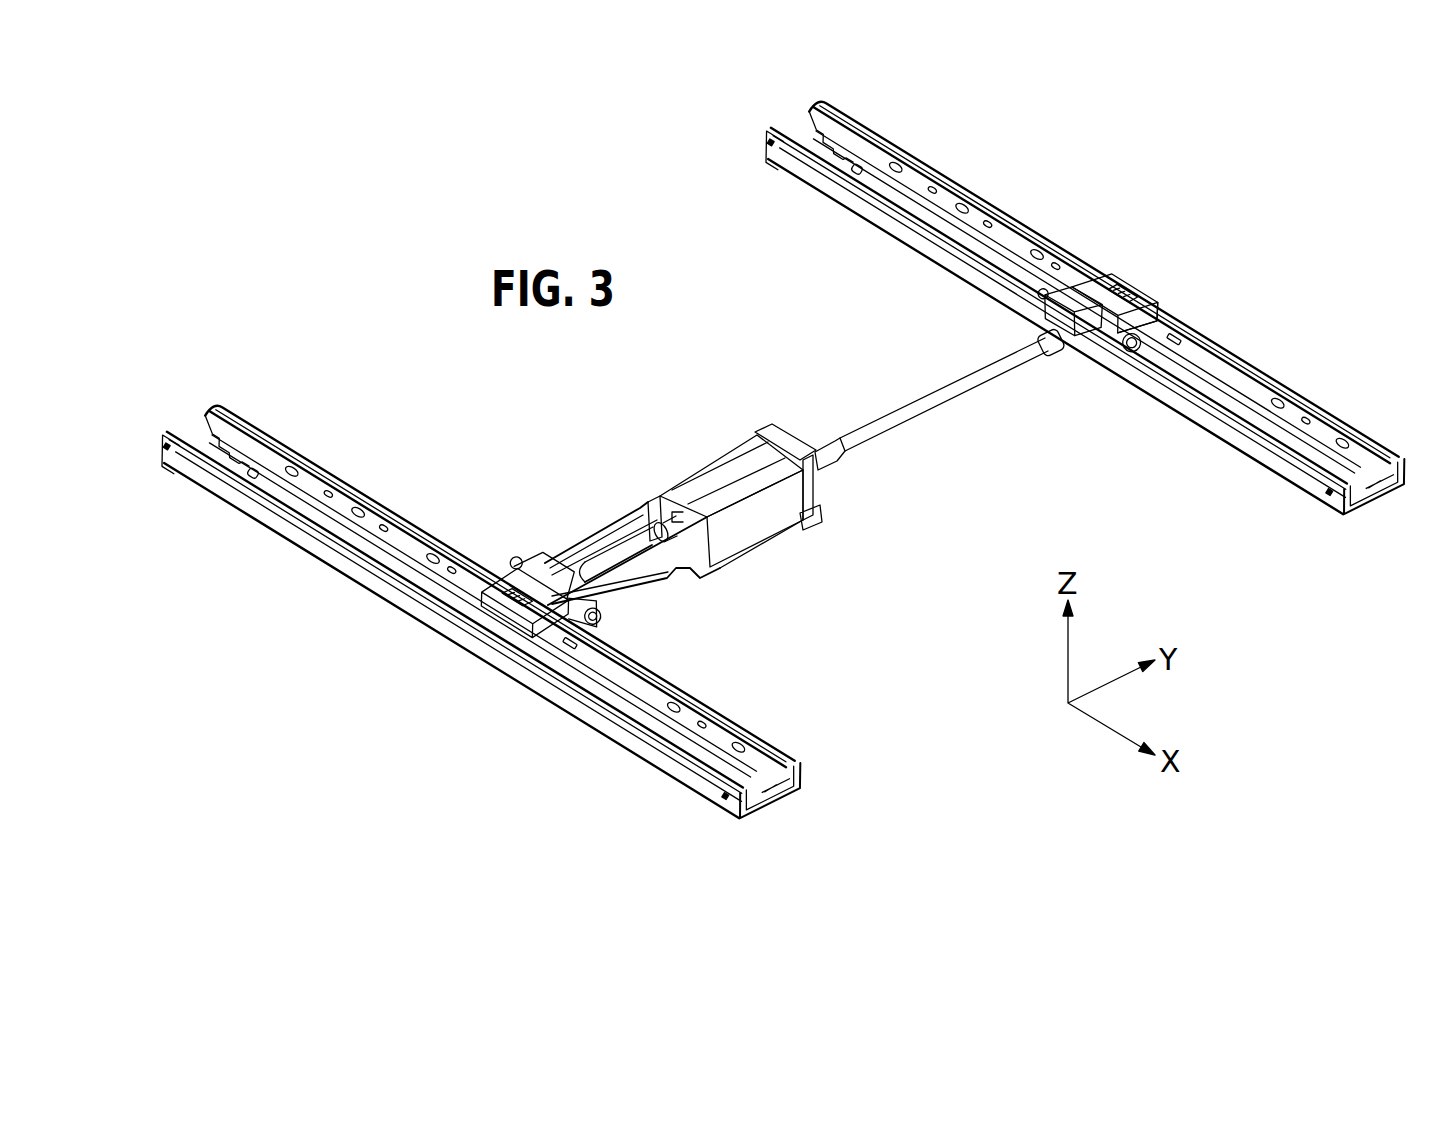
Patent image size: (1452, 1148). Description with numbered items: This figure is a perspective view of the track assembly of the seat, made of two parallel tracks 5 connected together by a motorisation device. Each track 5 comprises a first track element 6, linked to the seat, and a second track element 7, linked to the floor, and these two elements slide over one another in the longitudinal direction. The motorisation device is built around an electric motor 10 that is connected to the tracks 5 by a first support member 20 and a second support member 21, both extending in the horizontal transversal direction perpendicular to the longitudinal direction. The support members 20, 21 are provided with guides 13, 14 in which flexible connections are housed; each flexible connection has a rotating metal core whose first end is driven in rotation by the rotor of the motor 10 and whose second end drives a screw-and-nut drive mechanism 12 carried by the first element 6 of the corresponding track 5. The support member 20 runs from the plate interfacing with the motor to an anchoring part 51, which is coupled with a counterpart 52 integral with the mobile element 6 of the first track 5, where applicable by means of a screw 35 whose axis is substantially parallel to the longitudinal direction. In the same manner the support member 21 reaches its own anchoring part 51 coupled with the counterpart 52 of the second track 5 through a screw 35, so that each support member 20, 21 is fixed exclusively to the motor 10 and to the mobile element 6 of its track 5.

The track 5 is at (781, 831).
The first track element 6 is at (283, 490).
The second track element 7 is at (193, 478).
The electric motor 10 is at (730, 478).
The drive mechanism 12 is at (500, 600).
The guide 13 is at (627, 557).
The guide 14 is at (957, 392).
The first support member 20 is at (605, 494).
The second support member 21 is at (886, 395).
The screw 35 is at (508, 563).
The anchoring part 51 is at (540, 566).
The counterpart 52 is at (540, 620).